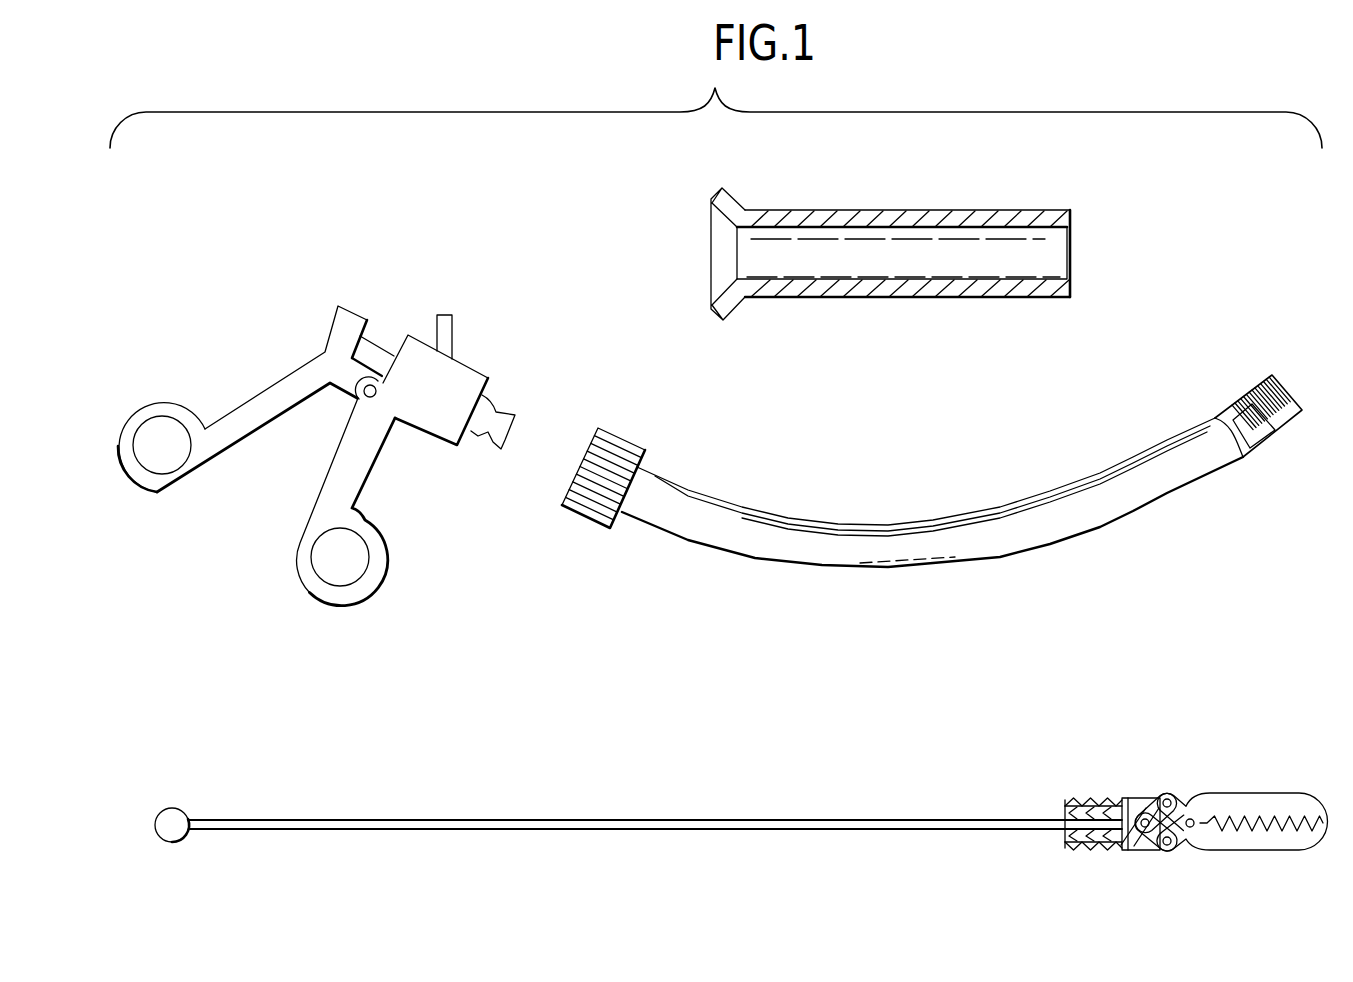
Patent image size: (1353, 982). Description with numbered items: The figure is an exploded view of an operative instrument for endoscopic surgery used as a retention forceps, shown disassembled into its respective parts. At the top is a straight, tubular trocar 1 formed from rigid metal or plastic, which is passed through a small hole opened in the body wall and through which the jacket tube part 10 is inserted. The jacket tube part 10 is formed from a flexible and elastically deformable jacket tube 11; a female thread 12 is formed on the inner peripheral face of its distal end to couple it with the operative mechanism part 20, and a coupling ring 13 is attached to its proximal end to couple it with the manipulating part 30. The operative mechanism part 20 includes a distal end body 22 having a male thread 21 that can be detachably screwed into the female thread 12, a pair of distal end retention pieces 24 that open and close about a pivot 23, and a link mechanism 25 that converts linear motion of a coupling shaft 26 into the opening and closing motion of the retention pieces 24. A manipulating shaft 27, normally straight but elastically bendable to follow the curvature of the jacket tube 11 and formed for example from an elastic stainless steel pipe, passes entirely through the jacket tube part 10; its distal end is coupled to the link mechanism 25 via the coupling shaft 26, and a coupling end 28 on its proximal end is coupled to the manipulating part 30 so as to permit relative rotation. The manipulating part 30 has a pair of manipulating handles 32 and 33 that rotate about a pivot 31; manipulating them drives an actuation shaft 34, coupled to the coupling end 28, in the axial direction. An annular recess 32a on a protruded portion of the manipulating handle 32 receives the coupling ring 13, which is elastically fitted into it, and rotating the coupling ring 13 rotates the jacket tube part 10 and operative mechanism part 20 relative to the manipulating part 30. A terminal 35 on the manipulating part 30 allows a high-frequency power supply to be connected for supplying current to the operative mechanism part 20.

The trocar 1 is at (927, 205).
The jacket tube part 10 is at (932, 501).
The jacket tube 11 is at (881, 528).
The female thread 12 is at (1279, 378).
The coupling ring 13 is at (628, 437).
The operative mechanism part 20 is at (1193, 781).
The male thread 21 is at (1076, 797).
The distal end body 22 is at (1115, 797).
The pivot 23 is at (1186, 851).
The distal end retention pieces 24 is at (1264, 826).
The link mechanism 25 is at (1168, 796).
The coupling shaft 26 is at (1128, 851).
The manipulating shaft 27 is at (683, 819).
The coupling end 28 is at (173, 808).
The manipulating part 30 is at (328, 460).
The pivot 31 is at (356, 399).
The manipulating handle 32 is at (417, 499).
The annular recess 32a is at (516, 412).
The manipulating handle 33 is at (150, 490).
The actuation shaft 34 is at (374, 334).
The terminal 35 is at (456, 323).